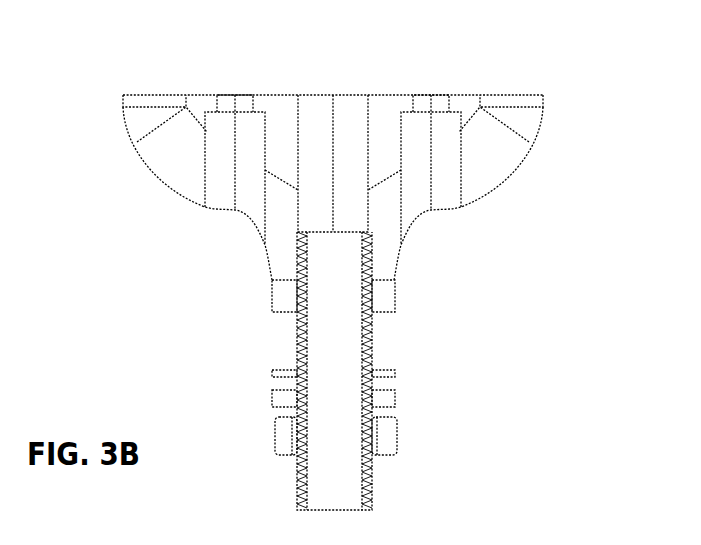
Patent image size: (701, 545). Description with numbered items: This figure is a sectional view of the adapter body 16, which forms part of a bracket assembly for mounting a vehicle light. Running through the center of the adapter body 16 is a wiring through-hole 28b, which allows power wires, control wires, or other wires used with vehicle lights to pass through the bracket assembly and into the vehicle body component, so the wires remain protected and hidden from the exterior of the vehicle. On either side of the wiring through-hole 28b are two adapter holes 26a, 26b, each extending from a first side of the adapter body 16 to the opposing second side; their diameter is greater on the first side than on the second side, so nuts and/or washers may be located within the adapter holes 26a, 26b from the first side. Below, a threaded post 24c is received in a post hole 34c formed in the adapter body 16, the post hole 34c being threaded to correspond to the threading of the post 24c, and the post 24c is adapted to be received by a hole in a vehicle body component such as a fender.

The adapter body 16 is at (125, 177).
The wiring through-hole 28b is at (315, 103).
The adapter hole 26a is at (217, 198).
The adapter hole 26b is at (450, 200).
The post hole 34c is at (293, 265).
The post 24c is at (368, 493).